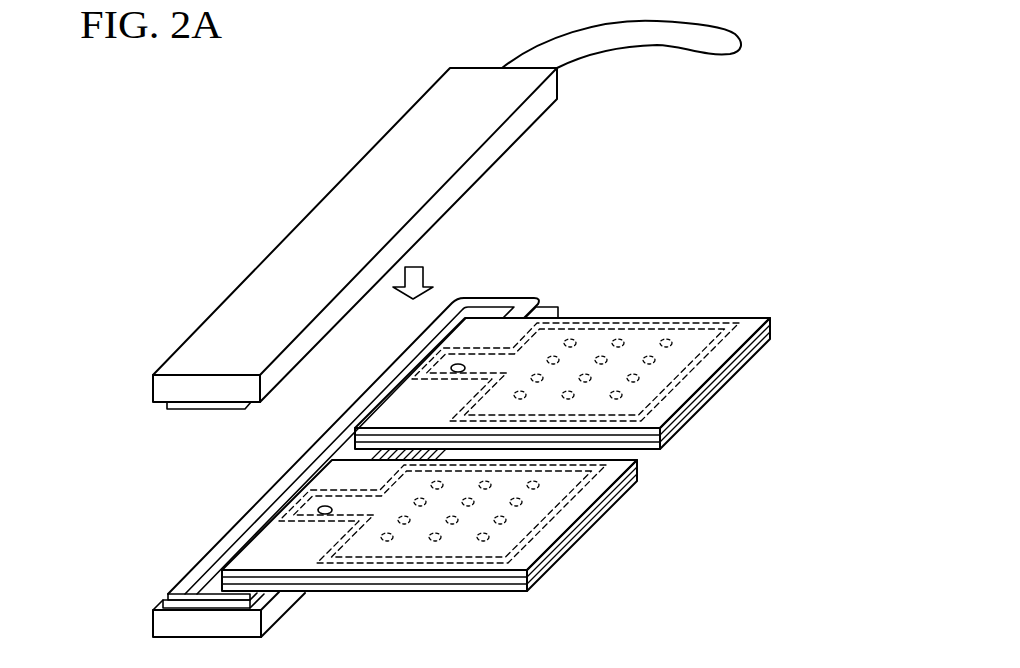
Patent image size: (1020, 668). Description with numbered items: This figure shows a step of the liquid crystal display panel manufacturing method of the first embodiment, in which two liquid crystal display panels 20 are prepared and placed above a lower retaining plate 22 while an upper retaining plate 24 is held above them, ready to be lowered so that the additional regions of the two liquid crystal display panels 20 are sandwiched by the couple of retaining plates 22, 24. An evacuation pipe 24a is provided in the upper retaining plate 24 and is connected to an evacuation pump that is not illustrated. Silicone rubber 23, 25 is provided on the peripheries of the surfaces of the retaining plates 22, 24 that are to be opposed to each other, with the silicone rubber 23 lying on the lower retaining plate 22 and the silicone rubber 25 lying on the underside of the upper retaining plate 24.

The liquid crystal display panel 20 is at (757, 392).
The retaining plate 22 is at (160, 625).
The silicone rubber 23 is at (176, 594).
The retaining plate 24 is at (162, 388).
The evacuation pipe 24a is at (651, 47).
The silicone rubber 25 is at (168, 406).